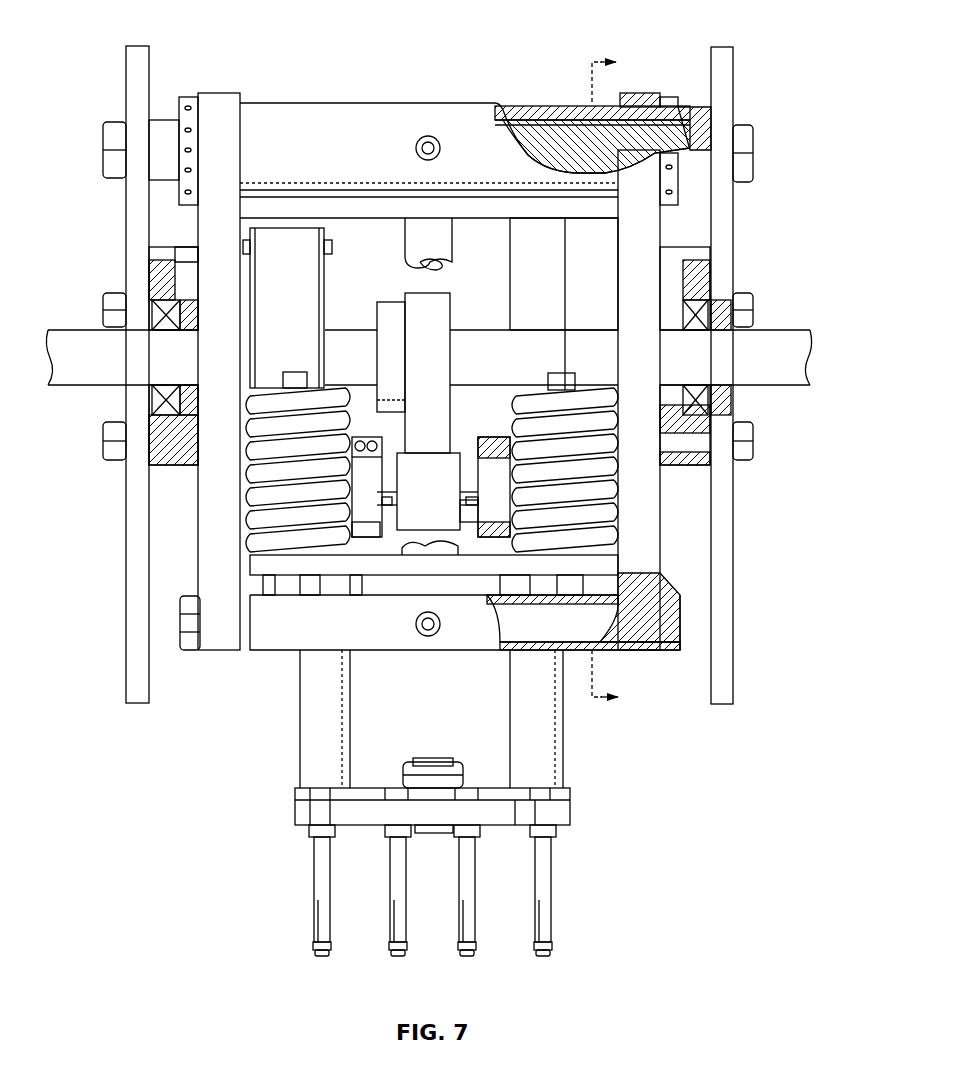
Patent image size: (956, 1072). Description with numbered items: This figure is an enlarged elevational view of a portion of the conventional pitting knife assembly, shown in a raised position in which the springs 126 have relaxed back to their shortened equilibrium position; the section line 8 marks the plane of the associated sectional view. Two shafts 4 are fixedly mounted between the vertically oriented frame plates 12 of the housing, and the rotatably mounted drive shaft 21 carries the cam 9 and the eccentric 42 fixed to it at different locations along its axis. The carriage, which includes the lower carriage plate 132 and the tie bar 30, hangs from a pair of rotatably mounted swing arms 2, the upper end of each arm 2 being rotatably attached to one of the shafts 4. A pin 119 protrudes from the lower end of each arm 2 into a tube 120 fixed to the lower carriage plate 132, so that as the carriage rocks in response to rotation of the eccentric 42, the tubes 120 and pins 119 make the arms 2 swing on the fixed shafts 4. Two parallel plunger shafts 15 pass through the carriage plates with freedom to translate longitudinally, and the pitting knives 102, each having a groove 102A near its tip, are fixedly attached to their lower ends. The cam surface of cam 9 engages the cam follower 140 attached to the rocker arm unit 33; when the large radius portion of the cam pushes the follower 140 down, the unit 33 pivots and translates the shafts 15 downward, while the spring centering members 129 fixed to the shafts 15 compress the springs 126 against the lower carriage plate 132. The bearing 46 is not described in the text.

The swing arm 2 is at (668, 95).
The shaft 4 is at (356, 100).
The section line 8- 8 is at (621, 382).
The cam 9 is at (432, 313).
The plate 12 is at (733, 57).
The plunger shaft 15 is at (350, 707).
The drive shaft 21 is at (772, 334).
The tie bar 30 is at (446, 242).
The rocker arm unit 33 is at (362, 432).
The eccentric 42 is at (285, 240).
The bearing 46 is at (150, 312).
The pitting knife 102 is at (330, 855).
The groove 102A is at (552, 946).
The pin 119 is at (668, 595).
The tube 120 is at (470, 642).
The spring 126 is at (600, 442).
The spring centering member 129 is at (566, 374).
The lower carriage plate 132 is at (358, 568).
The cam follower 140 is at (432, 467).